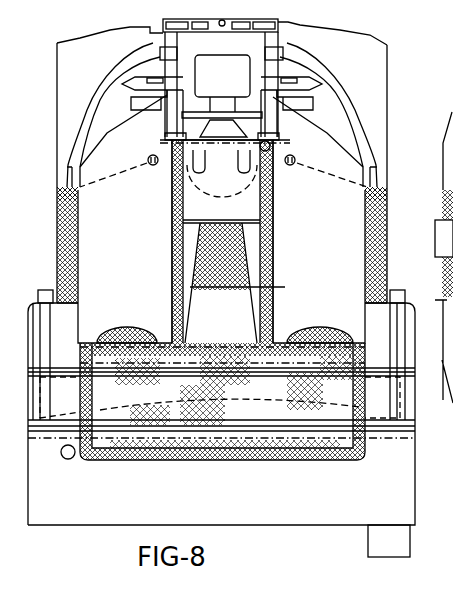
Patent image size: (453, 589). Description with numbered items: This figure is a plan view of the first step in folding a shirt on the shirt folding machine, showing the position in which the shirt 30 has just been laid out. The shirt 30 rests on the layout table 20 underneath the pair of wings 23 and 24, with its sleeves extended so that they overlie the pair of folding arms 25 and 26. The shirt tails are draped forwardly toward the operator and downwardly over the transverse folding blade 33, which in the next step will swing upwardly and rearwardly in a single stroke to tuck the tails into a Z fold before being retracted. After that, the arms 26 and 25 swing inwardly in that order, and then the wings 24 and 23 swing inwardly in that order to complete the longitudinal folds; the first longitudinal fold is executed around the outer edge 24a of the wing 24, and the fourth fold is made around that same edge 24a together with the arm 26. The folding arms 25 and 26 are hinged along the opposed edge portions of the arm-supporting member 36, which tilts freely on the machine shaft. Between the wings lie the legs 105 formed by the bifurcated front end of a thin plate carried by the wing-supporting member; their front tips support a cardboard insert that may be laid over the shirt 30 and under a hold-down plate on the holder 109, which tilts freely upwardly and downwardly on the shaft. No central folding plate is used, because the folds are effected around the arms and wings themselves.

The layout table 20 is at (221, 423).
The wing 23 is at (114, 193).
The wing 24 is at (319, 241).
The outer edge of wing 24a is at (372, 183).
The folding arm 25 is at (95, 115).
The folding arm 26 is at (358, 138).
The shirt 30 is at (335, 460).
The transverse folding blade 33 is at (440, 233).
The arm-supporting member 36 is at (233, 48).
The legs 105 is at (250, 302).
The holder 109 is at (221, 181).